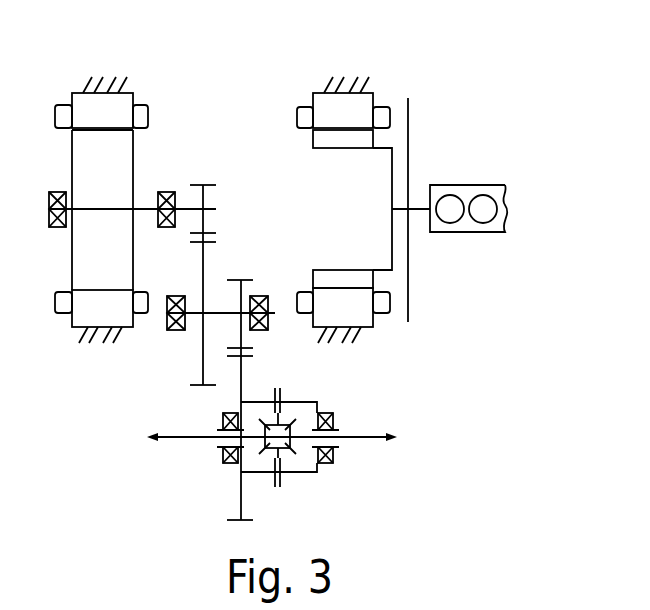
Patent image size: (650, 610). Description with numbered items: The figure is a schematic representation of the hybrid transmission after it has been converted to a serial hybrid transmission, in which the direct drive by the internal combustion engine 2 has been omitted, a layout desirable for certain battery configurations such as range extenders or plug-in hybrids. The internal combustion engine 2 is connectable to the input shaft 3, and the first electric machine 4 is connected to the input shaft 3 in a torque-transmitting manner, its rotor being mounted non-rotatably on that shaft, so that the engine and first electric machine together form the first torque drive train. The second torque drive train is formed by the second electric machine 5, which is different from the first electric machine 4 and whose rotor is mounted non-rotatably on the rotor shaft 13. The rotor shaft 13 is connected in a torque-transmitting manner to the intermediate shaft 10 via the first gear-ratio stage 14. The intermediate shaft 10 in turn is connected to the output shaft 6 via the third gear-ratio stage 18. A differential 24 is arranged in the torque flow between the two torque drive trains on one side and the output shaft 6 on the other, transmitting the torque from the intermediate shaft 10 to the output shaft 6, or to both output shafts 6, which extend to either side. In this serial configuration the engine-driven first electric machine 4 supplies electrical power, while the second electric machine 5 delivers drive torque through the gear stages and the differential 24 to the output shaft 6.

The internal combustion engine 2 is at (482, 200).
The input shaft 3 is at (417, 212).
The first electric machine 4 is at (372, 70).
The second electric machine 5 is at (99, 70).
The output shaft 6 is at (362, 435).
The intermediate shaft 10 is at (205, 309).
The rotor shaft 13 is at (141, 208).
The first gear-ratio stage 14 is at (184, 248).
The third gear-ratio stage 18 is at (224, 368).
The differential 24 is at (330, 479).